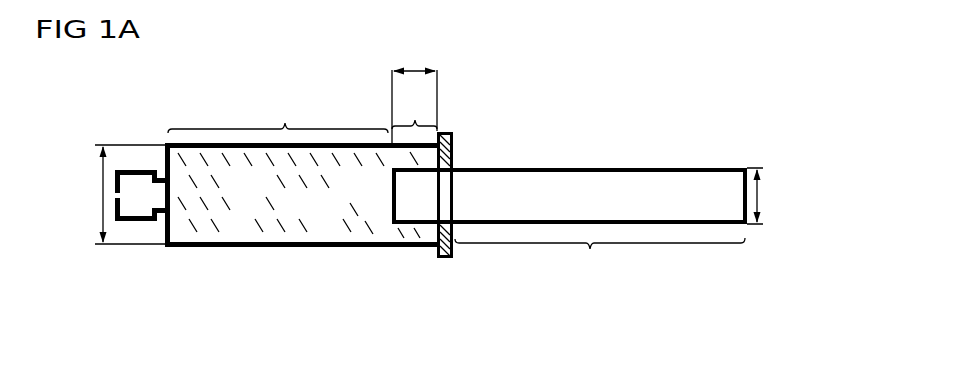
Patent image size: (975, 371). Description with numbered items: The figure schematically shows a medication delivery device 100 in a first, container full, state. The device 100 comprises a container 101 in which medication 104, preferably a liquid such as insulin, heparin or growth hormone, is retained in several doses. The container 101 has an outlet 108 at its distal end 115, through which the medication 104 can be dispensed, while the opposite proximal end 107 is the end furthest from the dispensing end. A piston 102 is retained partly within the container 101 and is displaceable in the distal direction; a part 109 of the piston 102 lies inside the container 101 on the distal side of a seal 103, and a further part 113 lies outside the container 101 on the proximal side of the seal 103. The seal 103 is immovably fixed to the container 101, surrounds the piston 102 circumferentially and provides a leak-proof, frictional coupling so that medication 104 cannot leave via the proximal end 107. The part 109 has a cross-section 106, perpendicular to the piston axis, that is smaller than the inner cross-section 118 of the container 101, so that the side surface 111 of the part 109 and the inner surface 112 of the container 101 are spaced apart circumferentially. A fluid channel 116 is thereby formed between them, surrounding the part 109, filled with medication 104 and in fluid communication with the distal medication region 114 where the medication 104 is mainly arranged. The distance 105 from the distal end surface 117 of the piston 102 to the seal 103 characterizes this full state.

The medication delivery device 100 is at (470, 93).
The container 101 is at (252, 251).
The piston 102 is at (635, 178).
The seal 103 is at (454, 251).
The medication 104 is at (331, 224).
The distance 105 is at (412, 68).
The cross-section 106 is at (763, 197).
The proximal end 107 is at (445, 270).
The outlet 108 is at (113, 196).
The part 109 is at (414, 110).
The side surface 111 is at (423, 234).
The inner surface 112 is at (230, 232).
The further part 113 is at (600, 259).
The medication region 114 is at (278, 113).
The distal end 115 is at (128, 266).
The fluid channel 116 is at (412, 230).
The distal end surface 117 is at (381, 195).
The cross-section 118 is at (101, 193).